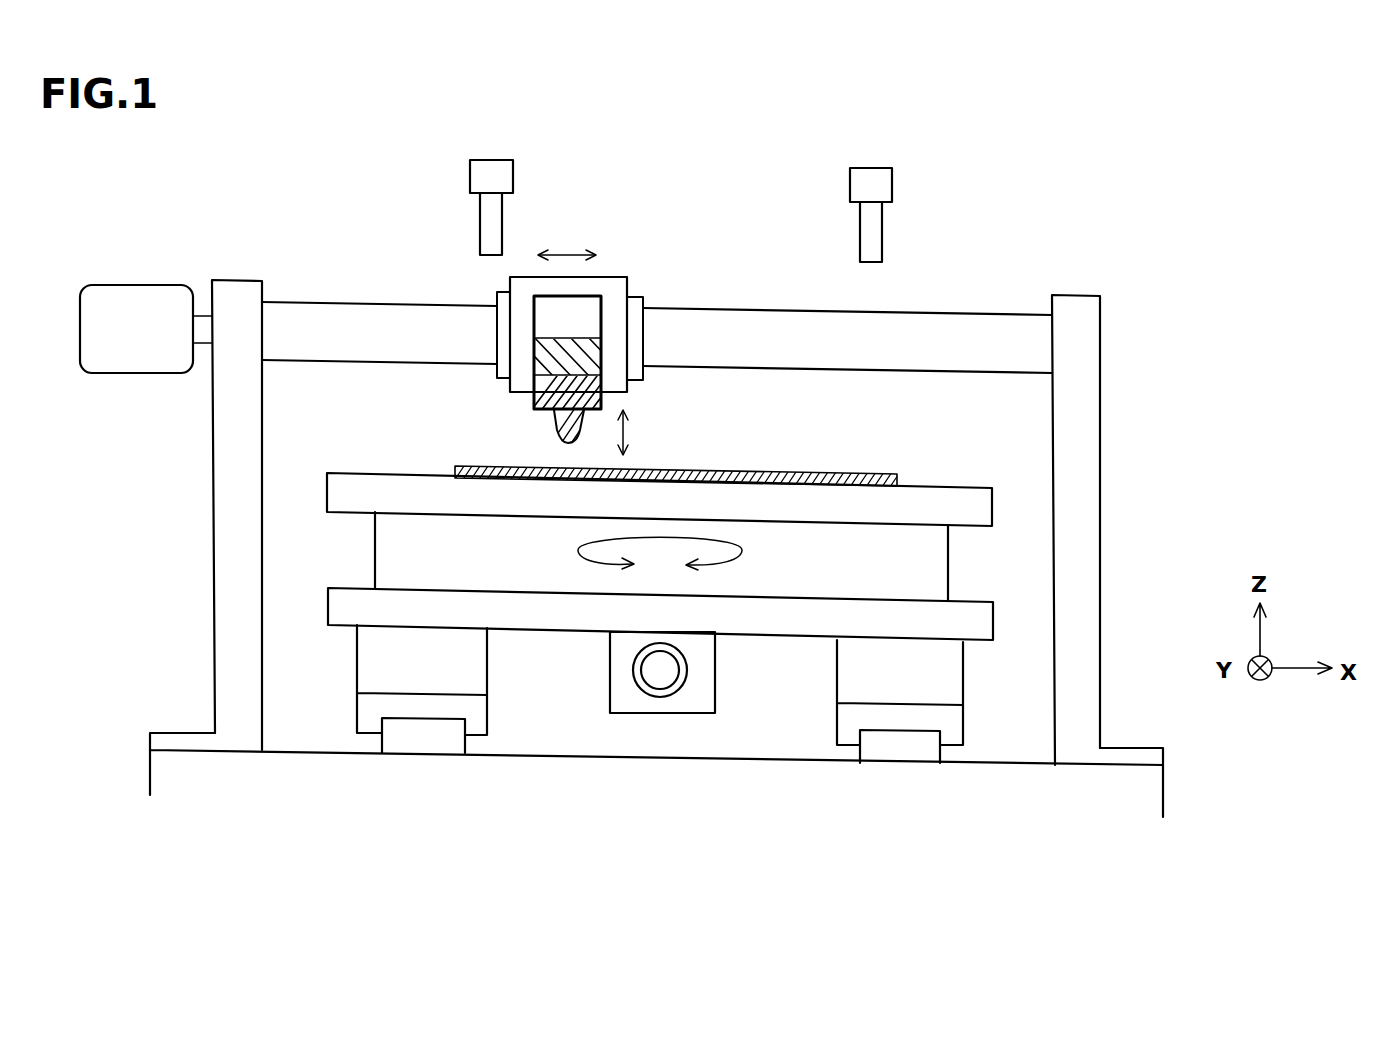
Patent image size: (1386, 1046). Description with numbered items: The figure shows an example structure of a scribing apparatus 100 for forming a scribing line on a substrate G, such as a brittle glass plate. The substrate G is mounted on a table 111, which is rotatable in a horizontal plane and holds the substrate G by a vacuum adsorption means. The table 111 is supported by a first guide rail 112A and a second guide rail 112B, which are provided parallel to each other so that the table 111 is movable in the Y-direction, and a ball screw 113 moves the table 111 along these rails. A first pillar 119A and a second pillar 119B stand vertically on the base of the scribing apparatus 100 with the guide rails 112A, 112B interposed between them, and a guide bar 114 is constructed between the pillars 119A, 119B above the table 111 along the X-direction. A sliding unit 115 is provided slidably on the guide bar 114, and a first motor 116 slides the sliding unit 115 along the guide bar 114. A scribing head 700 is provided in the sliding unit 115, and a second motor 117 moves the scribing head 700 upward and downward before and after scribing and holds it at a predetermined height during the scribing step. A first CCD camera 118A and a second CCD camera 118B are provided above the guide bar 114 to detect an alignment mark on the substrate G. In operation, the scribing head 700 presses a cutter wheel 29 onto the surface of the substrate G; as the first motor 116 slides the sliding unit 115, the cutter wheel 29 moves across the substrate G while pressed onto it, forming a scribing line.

The scribing apparatus 100 is at (158, 153).
The table 111 is at (342, 470).
The first guide rail 112A is at (430, 742).
The second guide rail 112B is at (900, 750).
The ball screw 113 is at (660, 678).
The guide bar 114 is at (990, 322).
The sliding unit 115 is at (613, 278).
The first motor 116 is at (138, 297).
The second motor 117 is at (592, 317).
The first CCD camera 118A is at (470, 166).
The second CCD camera 118B is at (892, 176).
The first pillar 119A is at (238, 560).
The second pillar 119B is at (1100, 446).
The cutter wheel 29 is at (565, 441).
The scribing head 700 is at (613, 366).
The substrate G is at (855, 470).